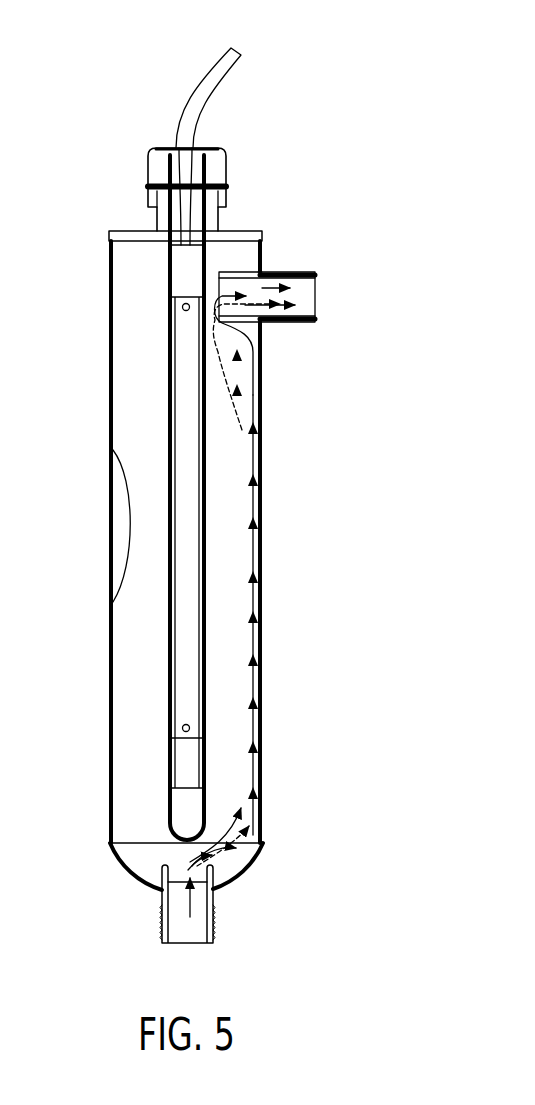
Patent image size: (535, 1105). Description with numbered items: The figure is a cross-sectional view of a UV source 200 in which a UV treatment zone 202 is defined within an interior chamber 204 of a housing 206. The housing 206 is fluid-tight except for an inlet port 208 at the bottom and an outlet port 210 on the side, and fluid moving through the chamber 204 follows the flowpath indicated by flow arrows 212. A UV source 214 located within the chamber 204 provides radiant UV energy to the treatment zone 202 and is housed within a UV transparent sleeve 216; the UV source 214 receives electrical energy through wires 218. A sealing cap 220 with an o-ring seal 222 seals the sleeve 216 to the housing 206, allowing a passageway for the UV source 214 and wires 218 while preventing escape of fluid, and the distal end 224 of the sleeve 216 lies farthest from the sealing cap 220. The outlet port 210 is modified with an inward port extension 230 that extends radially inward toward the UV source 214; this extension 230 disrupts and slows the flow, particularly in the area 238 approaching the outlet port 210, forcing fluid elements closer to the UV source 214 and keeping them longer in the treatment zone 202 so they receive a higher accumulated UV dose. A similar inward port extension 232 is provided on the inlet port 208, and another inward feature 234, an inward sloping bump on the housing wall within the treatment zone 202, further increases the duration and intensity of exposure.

The UV source 200 is at (112, 75).
The UV treatment zone 202 is at (132, 420).
The interior chamber 204 is at (133, 710).
The housing 206 is at (108, 556).
The inlet port 208 is at (162, 918).
The outlet port 210 is at (300, 272).
The flow arrows 212 is at (255, 535).
The UV source 214 is at (182, 632).
The UV transparent sleeve 216 is at (203, 470).
The wires 218 is at (200, 78).
The sealing cap 220 is at (155, 165).
The o-ring seal 222 is at (136, 187).
The distal end 224 is at (205, 728).
The inward port extension 230 is at (243, 270).
The inward port extension 232 is at (163, 858).
The inward feature 234 is at (116, 486).
The area approaching the outlet port 238 is at (238, 364).